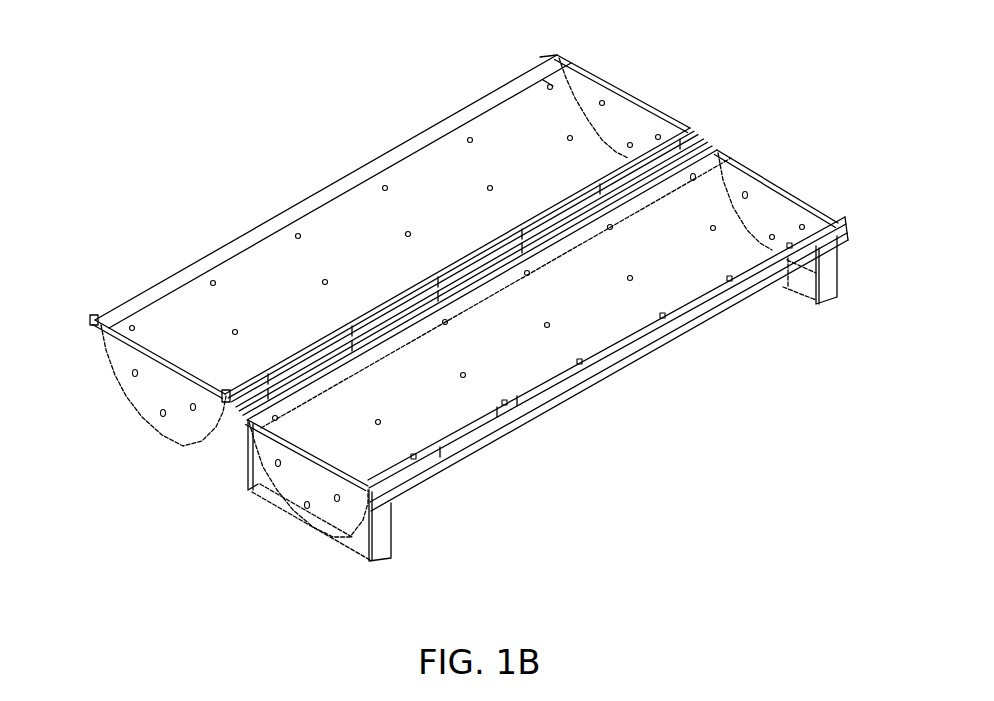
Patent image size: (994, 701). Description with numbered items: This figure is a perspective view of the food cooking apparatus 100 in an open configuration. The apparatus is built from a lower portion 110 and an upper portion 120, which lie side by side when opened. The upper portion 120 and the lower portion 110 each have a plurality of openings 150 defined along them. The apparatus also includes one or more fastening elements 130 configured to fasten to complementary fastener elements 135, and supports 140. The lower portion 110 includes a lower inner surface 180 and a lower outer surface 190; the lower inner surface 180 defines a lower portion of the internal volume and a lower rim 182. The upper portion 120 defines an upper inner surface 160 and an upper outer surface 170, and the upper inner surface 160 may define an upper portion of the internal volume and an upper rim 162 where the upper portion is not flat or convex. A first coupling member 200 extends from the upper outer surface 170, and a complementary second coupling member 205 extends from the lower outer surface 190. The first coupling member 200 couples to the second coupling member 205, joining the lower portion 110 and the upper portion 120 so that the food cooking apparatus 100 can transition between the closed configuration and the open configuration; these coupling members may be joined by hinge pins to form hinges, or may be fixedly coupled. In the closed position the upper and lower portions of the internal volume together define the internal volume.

The food cooking apparatus 100 is at (277, 80).
The lower portion 110 is at (272, 500).
The upper portion 120 is at (177, 273).
The fastening elements 130 is at (732, 306).
The complementary fastener elements 135 is at (93, 318).
The supports 140 is at (842, 267).
The openings 150 is at (549, 86).
The upper inner surface 160 is at (560, 100).
The upper rim 162 is at (653, 112).
The upper outer surface 170 is at (232, 417).
The lower inner surface 180 is at (730, 182).
The lower rim 182 is at (697, 193).
The lower outer surface 190 is at (367, 530).
The first coupling member 200 is at (410, 313).
The second coupling member 205 is at (430, 290).